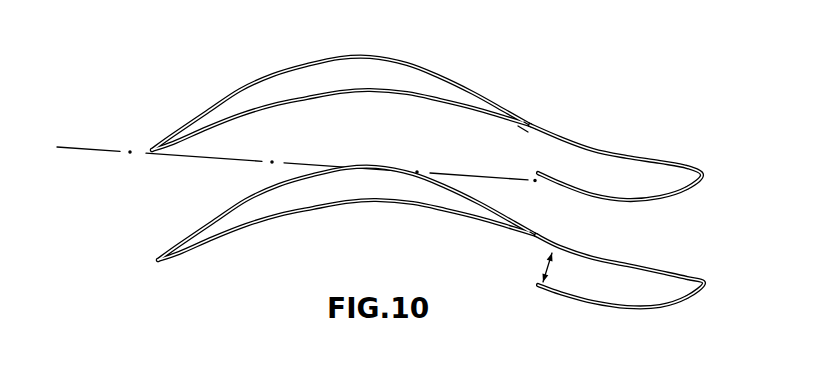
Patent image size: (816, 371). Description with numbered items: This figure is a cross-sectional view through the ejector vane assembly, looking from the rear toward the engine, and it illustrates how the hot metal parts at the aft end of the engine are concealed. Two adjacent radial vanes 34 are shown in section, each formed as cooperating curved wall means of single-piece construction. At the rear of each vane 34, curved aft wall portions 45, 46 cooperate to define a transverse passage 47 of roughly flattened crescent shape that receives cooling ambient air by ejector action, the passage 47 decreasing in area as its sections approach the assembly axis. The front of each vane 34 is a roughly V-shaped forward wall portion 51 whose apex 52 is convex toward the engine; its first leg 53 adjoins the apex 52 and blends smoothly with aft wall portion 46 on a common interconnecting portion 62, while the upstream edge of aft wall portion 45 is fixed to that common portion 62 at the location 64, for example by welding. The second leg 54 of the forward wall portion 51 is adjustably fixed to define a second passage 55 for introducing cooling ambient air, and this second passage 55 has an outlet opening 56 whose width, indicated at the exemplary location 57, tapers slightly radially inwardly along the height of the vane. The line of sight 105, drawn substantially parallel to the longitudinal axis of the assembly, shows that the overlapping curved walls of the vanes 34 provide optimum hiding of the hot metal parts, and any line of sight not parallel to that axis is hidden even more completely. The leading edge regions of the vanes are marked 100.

The radial vane 34 is at (606, 93).
The aft wall portion 45 is at (368, 94).
The aft wall portion 46 is at (402, 62).
The passage 47 is at (327, 78).
The V-shaped forward wall portion 51 is at (686, 160).
The apex 52 is at (706, 176).
The first leg 53 is at (632, 160).
The second leg 54 is at (602, 202).
The second passage 55 is at (635, 180).
The outlet opening 56 is at (540, 153).
The exemplary location 57 is at (556, 268).
The common interconnecting portion 62 is at (529, 123).
The fixing location 64 is at (520, 130).
The airfoil leading edge 100 is at (150, 153).
The line of sight 105 is at (78, 147).